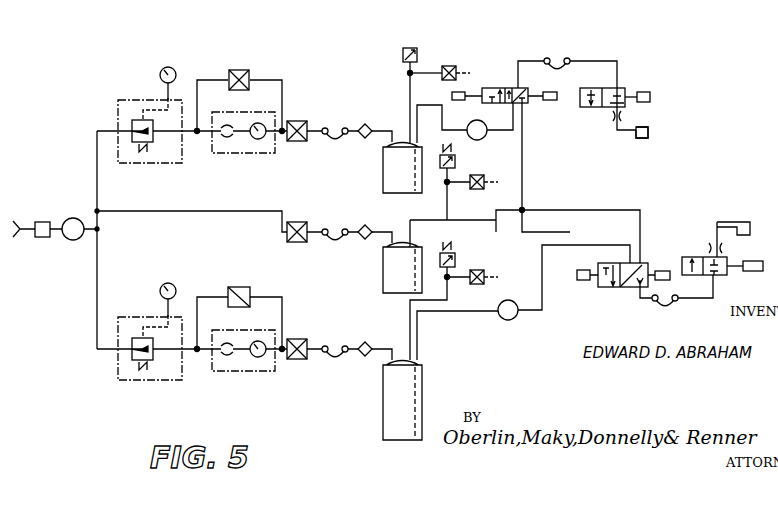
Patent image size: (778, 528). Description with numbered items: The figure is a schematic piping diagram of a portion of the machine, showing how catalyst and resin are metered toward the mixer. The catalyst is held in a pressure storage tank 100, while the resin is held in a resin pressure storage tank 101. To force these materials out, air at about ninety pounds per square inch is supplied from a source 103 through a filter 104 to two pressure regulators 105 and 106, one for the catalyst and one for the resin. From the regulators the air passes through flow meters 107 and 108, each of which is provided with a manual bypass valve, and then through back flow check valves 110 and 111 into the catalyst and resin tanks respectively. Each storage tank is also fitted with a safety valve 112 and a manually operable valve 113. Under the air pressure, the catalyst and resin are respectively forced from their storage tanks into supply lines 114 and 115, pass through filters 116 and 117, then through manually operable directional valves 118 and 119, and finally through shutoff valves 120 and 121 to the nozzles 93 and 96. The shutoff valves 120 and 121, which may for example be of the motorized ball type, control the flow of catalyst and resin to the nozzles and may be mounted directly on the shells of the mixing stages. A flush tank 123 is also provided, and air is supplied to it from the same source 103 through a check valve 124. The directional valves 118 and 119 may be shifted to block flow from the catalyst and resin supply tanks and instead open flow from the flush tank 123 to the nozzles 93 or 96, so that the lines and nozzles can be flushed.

The nozzle 93 is at (650, 130).
The nozzle 96 is at (753, 222).
The pressure storage tank 100 is at (382, 172).
The resin pressure storage tank 101 is at (383, 396).
The source 103 is at (17, 224).
The filter 104 is at (72, 241).
The pressure regulator 105 is at (117, 103).
The pressure regulator 106 is at (145, 381).
The flow meter 107 is at (245, 157).
The flow meter 108 is at (247, 371).
The back flow check valve 110 is at (363, 125).
The back flow check valve 111 is at (368, 342).
The safety valve 112 is at (413, 48).
The manually operable valve 113 is at (452, 67).
The supply line 114 is at (417, 100).
The supply line 115 is at (458, 312).
The filter 116 is at (479, 141).
The filter 117 is at (511, 321).
The manually operable directional valve 118 is at (528, 103).
The manually operable directional valve 119 is at (602, 287).
The shutoff valve 120 is at (625, 88).
The shutoff valve 121 is at (697, 257).
The flush tank 123 is at (382, 272).
The check valve 124 is at (363, 224).